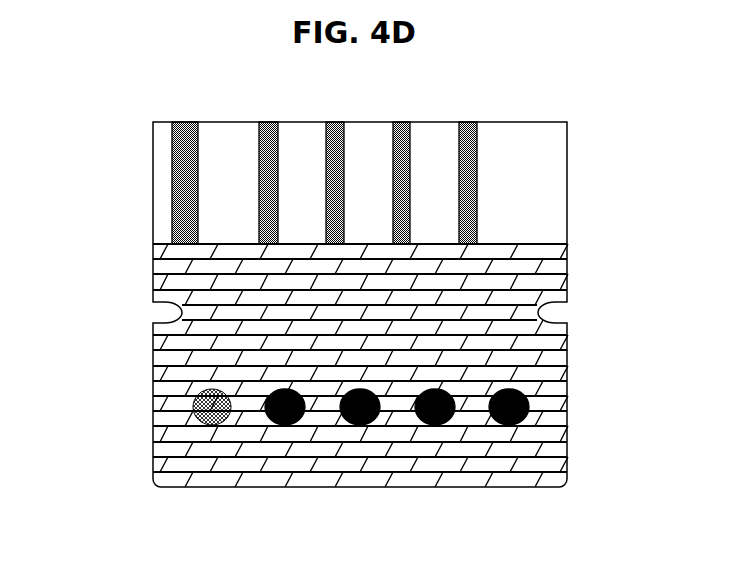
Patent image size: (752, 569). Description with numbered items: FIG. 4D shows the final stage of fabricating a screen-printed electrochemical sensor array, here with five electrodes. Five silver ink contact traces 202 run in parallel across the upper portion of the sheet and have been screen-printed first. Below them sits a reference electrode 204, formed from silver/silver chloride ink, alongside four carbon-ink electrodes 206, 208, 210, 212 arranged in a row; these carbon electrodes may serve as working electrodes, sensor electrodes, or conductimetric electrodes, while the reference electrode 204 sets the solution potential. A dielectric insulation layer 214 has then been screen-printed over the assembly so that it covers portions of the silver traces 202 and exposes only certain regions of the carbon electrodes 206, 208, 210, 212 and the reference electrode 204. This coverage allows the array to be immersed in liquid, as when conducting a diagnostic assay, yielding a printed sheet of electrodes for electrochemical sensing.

The silver ink contact traces 202 is at (190, 190).
The reference electrode 204 is at (207, 403).
The electrode 206 is at (268, 428).
The electrode 208 is at (345, 428).
The electrode 210 is at (423, 428).
The electrode 212 is at (497, 428).
The dielectric insulation layer 214 is at (438, 297).